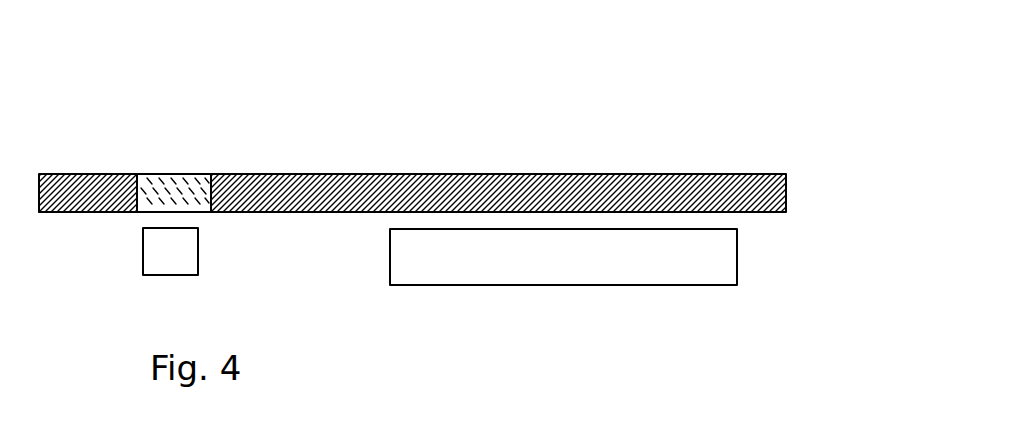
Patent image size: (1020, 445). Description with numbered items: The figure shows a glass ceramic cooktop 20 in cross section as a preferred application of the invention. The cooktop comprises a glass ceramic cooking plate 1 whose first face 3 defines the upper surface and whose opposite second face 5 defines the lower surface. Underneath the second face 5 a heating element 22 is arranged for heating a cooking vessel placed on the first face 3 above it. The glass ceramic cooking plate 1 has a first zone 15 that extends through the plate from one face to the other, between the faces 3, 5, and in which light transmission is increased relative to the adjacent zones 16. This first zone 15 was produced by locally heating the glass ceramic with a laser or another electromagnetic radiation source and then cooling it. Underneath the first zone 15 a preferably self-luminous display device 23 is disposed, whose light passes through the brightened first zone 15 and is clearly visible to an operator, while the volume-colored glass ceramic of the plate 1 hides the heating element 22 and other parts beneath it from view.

The glass ceramic cooktop 20 is at (731, 128).
The glass ceramic cooking plate 1 is at (786, 187).
The first zone 15 is at (161, 188).
The first face 3 is at (398, 173).
The adjacent zones 16 is at (257, 202).
The second face 5 is at (757, 212).
The display device 23 is at (143, 266).
The heating element 22 is at (610, 285).